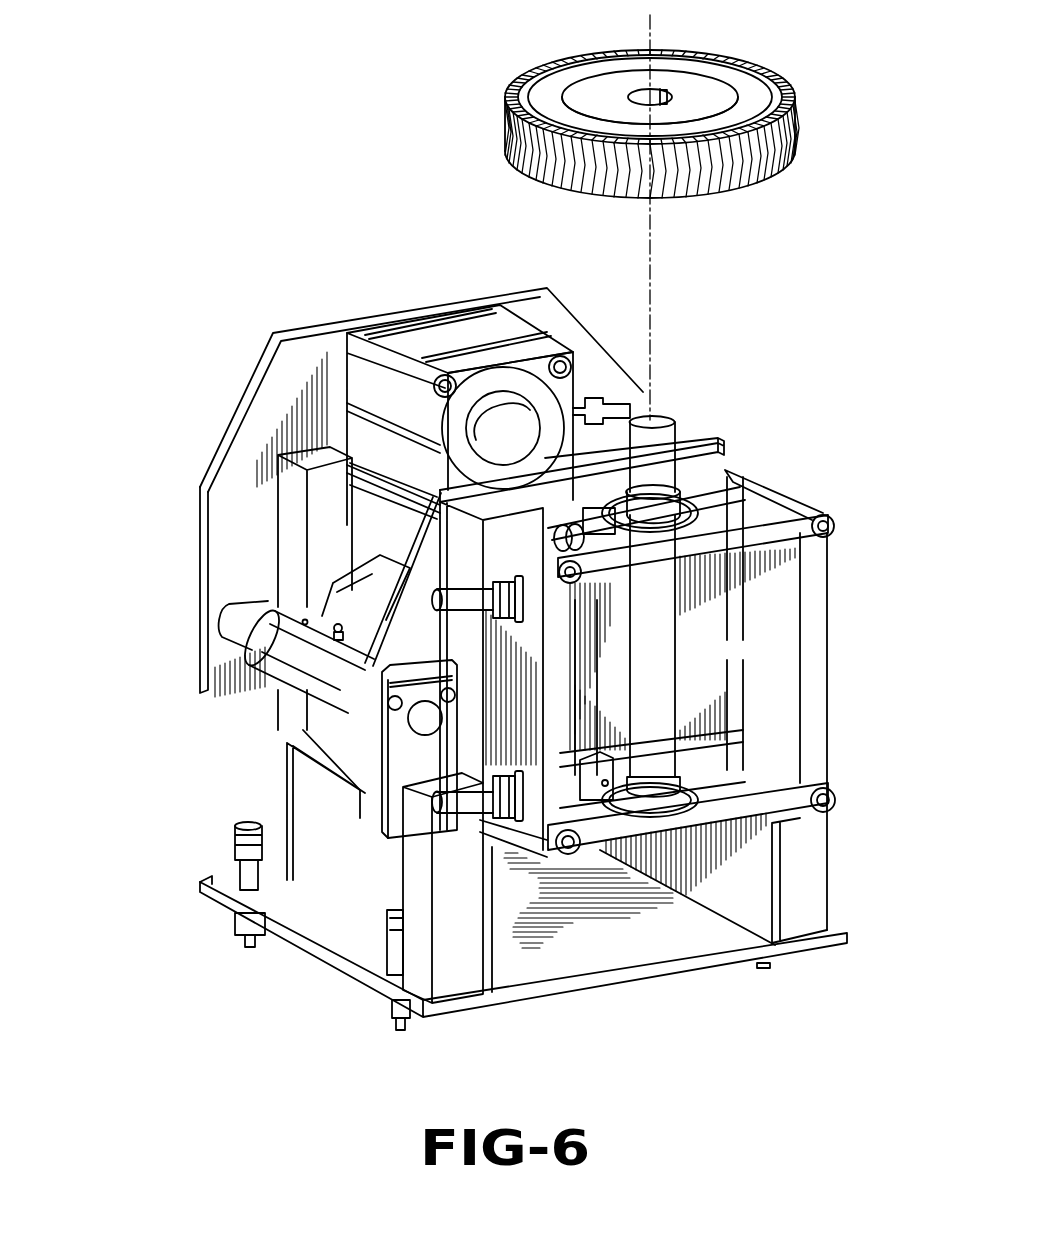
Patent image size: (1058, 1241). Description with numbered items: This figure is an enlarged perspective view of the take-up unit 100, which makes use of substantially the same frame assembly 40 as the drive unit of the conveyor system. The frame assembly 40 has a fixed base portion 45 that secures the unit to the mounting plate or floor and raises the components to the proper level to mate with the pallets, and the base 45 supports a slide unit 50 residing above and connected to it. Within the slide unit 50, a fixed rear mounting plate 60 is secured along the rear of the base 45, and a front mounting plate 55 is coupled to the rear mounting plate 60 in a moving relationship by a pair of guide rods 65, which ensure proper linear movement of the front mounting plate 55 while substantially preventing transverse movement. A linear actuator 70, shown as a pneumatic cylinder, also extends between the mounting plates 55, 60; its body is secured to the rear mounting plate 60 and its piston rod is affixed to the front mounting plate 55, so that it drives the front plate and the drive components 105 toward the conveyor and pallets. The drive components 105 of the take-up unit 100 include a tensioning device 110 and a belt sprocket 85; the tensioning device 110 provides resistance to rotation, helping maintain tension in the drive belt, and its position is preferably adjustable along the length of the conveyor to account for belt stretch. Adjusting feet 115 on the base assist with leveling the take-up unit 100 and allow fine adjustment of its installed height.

The take-up unit 100 is at (292, 137).
The belt sprocket 85 is at (730, 67).
The frame assembly 40 is at (207, 443).
The linear actuator 70 is at (458, 326).
The rear mounting plate 60 is at (545, 320).
The drive components 105 is at (820, 482).
The tensioning device 110 is at (686, 666).
The guide rods 65 is at (228, 614).
The front mounting plate 55 is at (362, 670).
The slide unit 50 is at (337, 720).
The fixed base portion 45 is at (450, 960).
The adjusting feet 115 is at (247, 852).